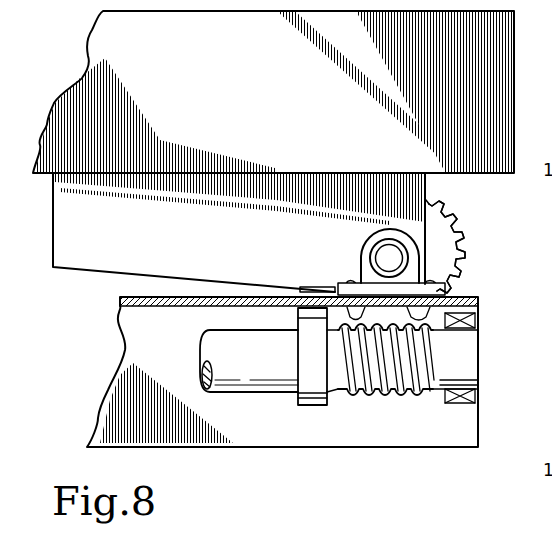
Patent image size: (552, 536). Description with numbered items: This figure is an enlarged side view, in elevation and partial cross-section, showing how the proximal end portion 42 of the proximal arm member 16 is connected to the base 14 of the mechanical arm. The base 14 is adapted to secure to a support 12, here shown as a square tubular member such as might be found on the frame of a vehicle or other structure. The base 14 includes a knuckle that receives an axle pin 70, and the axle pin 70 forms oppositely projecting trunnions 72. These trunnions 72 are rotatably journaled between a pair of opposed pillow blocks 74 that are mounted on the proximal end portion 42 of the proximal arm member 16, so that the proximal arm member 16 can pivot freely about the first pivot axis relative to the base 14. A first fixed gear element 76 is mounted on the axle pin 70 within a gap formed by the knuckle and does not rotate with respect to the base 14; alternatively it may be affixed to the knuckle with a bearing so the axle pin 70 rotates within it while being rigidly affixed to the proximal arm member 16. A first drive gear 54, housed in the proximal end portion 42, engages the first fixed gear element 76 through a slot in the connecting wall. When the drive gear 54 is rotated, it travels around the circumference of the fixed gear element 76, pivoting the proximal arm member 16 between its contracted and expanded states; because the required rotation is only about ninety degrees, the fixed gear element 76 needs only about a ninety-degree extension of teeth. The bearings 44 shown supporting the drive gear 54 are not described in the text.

The support 12 is at (265, 101).
The base 14 is at (113, 270).
The proximal arm member 16 is at (155, 447).
The proximal end portion 42 is at (478, 270).
The bearings 44 is at (309, 396).
The first drive gear 54 is at (379, 398).
The axle pin 70 is at (392, 258).
The trunnions 72 is at (449, 314).
The pillow blocks 74 is at (352, 283).
The first fixed gear element 76 is at (437, 240).